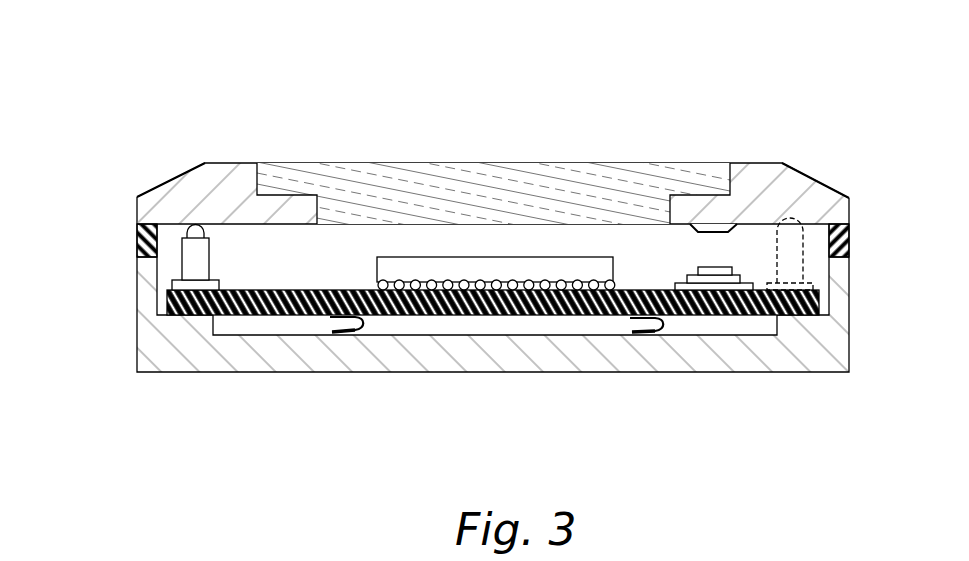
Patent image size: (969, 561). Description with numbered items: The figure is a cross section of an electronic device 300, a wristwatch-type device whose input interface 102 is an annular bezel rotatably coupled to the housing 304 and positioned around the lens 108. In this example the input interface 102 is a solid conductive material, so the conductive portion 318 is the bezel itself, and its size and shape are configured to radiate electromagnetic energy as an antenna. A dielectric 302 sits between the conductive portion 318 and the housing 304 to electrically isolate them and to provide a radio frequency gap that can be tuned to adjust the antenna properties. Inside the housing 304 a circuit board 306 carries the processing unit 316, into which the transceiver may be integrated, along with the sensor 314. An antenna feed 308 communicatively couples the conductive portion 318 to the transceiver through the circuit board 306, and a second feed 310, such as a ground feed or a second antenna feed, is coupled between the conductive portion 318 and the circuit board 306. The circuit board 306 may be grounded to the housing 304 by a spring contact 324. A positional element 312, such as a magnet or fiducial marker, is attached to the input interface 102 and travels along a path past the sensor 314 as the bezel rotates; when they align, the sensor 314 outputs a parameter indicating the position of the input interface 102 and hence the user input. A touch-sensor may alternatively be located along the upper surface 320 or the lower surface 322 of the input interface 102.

The electronic device 300 is at (95, 27).
The input interface 102 is at (230, 163).
The lens 108 is at (500, 163).
The dielectric 302 is at (137, 238).
The housing 304 is at (190, 368).
The circuit board 306 is at (167, 301).
The antenna feed 308 is at (188, 270).
The second feed 310 is at (797, 268).
The positional element 312 is at (714, 226).
The sensor 314 is at (715, 283).
The processing unit 316 is at (376, 268).
The conductive portion 318 is at (172, 178).
The upper surface 320 is at (813, 177).
The lower surface 322 is at (753, 228).
The spring contact 324 is at (362, 327).